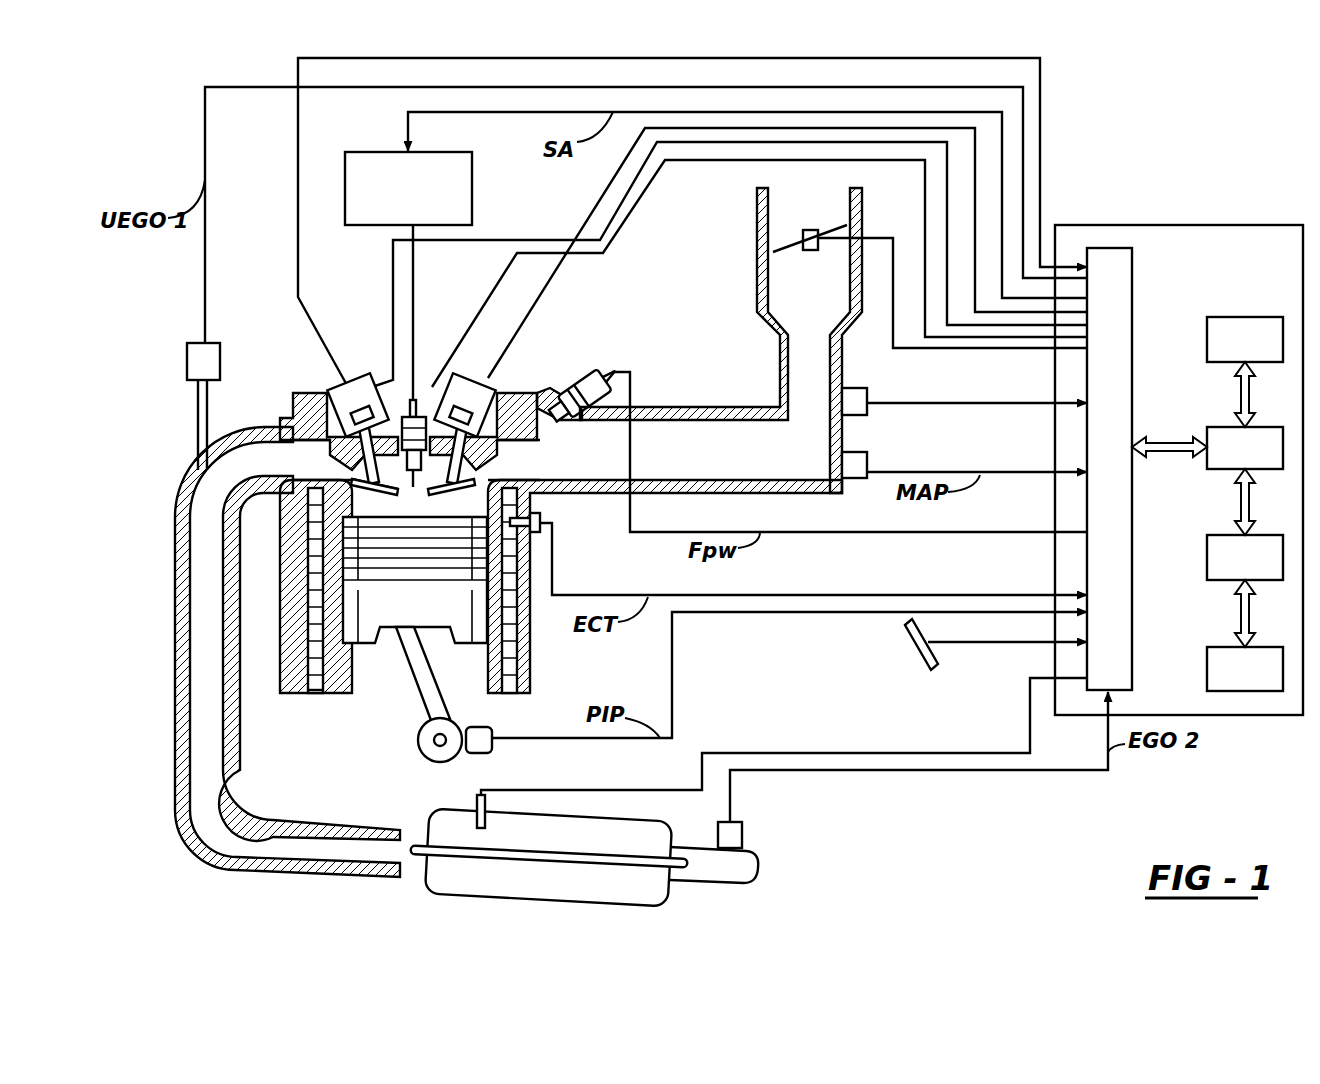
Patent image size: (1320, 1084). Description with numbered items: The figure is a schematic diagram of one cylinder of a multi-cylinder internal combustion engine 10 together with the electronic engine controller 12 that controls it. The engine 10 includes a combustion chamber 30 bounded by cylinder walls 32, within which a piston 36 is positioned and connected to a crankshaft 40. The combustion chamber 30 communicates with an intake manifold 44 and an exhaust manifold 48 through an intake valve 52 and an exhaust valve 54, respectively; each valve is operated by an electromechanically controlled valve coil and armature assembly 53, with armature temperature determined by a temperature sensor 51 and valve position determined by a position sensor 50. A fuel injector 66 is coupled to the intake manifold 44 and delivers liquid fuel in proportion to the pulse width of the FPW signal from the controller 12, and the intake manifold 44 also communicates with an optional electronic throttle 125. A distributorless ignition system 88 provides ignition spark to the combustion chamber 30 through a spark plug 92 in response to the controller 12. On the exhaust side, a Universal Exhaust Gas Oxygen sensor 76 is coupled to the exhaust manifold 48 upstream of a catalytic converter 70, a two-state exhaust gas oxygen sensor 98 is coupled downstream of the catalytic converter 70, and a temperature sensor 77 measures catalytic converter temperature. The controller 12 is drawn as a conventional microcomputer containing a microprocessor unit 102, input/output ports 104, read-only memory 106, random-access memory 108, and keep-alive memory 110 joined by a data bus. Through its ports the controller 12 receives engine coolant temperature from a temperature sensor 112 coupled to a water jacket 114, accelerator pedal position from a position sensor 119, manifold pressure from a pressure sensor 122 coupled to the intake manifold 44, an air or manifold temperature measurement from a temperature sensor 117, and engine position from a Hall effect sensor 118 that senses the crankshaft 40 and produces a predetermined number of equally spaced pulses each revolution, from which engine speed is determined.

The internal combustion engine 10 is at (292, 390).
The electronic engine controller 12 is at (1178, 225).
The combustion chamber 30 is at (410, 500).
The cylinder walls 32 is at (343, 694).
The piston 36 is at (405, 615).
The crankshaft 40 is at (418, 745).
The intake manifold 44 is at (768, 463).
The exhaust manifold 48 is at (175, 515).
The position sensor 50 is at (372, 378).
The temperature sensor 51 is at (435, 378).
The intake valve 52 is at (497, 455).
The valve coil and armature assembly 53 is at (340, 380).
The exhaust valve 54 is at (350, 468).
The fuel injector 66 is at (565, 372).
The catalytic converter 70 is at (507, 902).
The Universal Exhaust Gas Oxygen (UEGO) sensor 76 is at (187, 358).
The temperature sensor 77 is at (478, 815).
The distributorless ignition system 88 is at (472, 200).
The spark plug 92 is at (416, 400).
The two-state exhaust gas oxygen sensor 98 is at (748, 822).
The microprocessor unit 102 is at (1210, 427).
The input/output ports 104 is at (1135, 278).
The read-only memory 106 is at (1246, 317).
The random-access memory 108 is at (1210, 535).
The keep-alive memory 110 is at (1210, 647).
The temperature sensor 112 is at (540, 512).
The water jacket 114 is at (312, 695).
The temperature sensor 117 is at (875, 388).
The Hall effect sensor 118 is at (490, 753).
The position sensor 119 is at (905, 657).
The pressure sensor 122 is at (872, 461).
The electronic throttle 125 is at (800, 222).